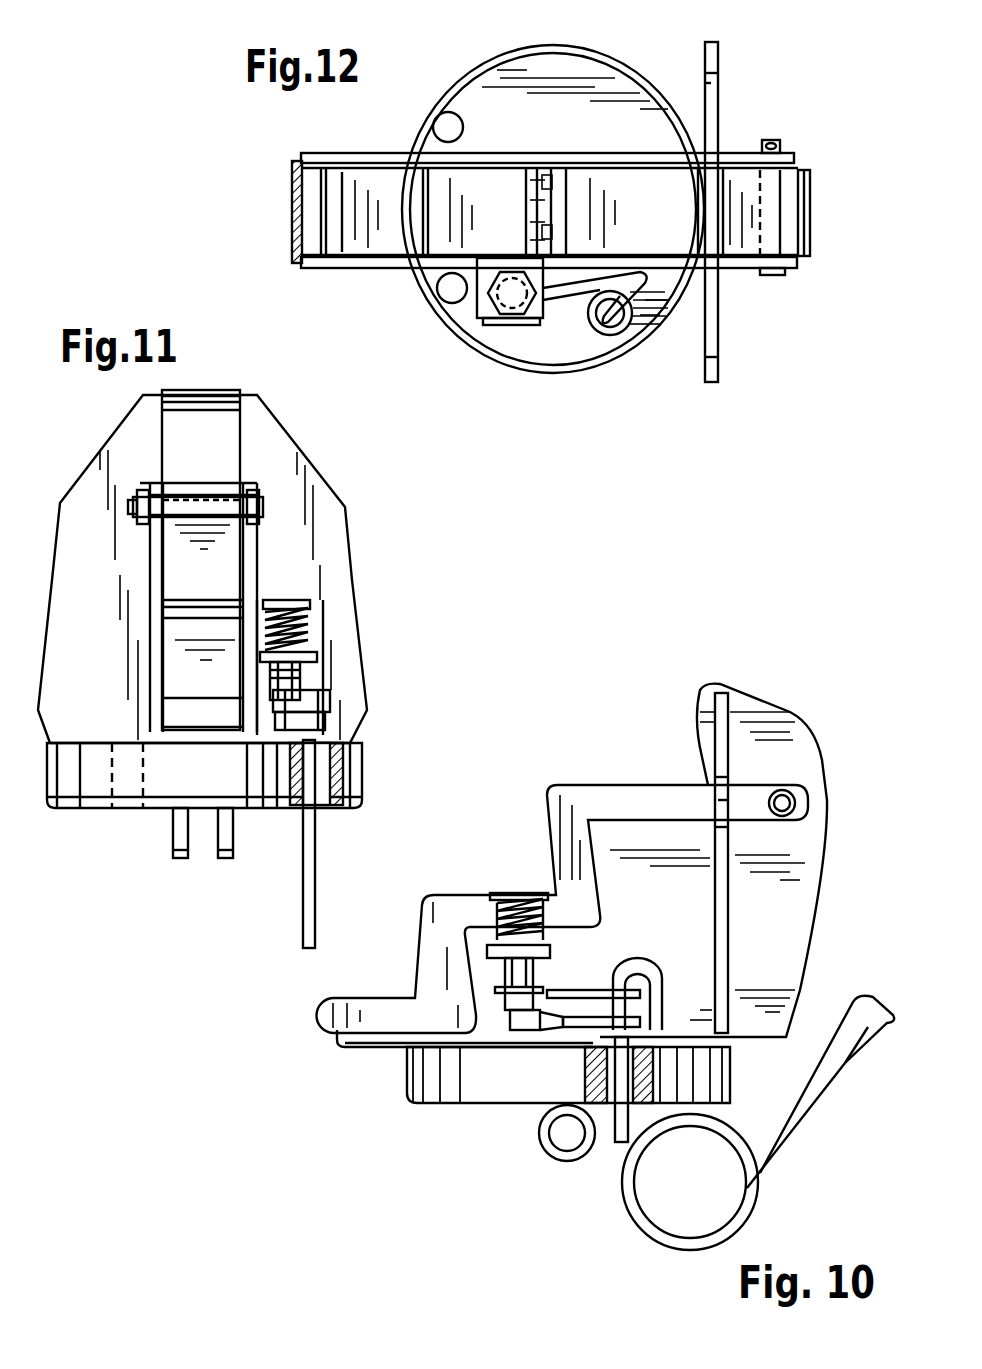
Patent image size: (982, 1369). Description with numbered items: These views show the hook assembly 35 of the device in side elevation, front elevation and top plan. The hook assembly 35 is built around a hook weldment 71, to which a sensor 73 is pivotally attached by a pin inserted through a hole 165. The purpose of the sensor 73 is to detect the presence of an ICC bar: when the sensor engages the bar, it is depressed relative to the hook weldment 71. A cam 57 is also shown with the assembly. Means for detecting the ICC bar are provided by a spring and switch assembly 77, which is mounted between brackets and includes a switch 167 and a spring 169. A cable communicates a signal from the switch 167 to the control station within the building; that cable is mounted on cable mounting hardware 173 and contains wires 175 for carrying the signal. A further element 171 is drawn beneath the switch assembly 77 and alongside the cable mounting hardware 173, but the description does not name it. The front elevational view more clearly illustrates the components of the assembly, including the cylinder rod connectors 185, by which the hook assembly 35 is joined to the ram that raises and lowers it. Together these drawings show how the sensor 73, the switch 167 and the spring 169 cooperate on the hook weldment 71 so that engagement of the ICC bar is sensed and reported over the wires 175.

In FIG. 10, the hook assembly 35 is at (218, 1142).
In FIG. 12, the cam 57 is at (719, 68).
In FIG. 11, the cam 57 is at (83, 557).
In FIG. 10, the cam 57 is at (730, 940).
In FIG. 12, the hook weldment 71 is at (790, 183).
In FIG. 11, the hook weldment 71 is at (210, 472).
In FIG. 10, the hook weldment 71 is at (765, 968).
In FIG. 12, the sensor 73 is at (360, 266).
In FIG. 11, the sensor 73 is at (150, 650).
In FIG. 10, the sensor 73 is at (587, 802).
In FIG. 12, the spring and switch assembly 77 is at (462, 315).
In FIG. 11, the spring and switch assembly 77 is at (356, 607).
In FIG. 10, the spring and switch assembly 77 is at (485, 904).
In FIG. 11, the hole 165 is at (265, 490).
In FIG. 10, the hole 165 is at (790, 792).
In FIG. 11, the switch 167 is at (302, 670).
In FIG. 10, the switch 167 is at (510, 968).
In FIG. 11, the spring 169 is at (312, 632).
In FIG. 10, the spring 169 is at (523, 898).
In FIG. 12, the lever shaft 171 is at (562, 295).
In FIG. 11, the lever shaft 171 is at (305, 870).
In FIG. 10, the lever shaft 171 is at (653, 957).
In FIG. 12, the cable mounting hardware 173 is at (604, 338).
In FIG. 11, the cable mounting hardware 173 is at (350, 733).
In FIG. 10, the cable mounting hardware 173 is at (752, 1033).
In FIG. 10, the wires 175 is at (860, 996).
In FIG. 11, the cylinder rod connectors 185 is at (225, 862).
In FIG. 10, the cylinder rod connectors 185 is at (553, 1150).